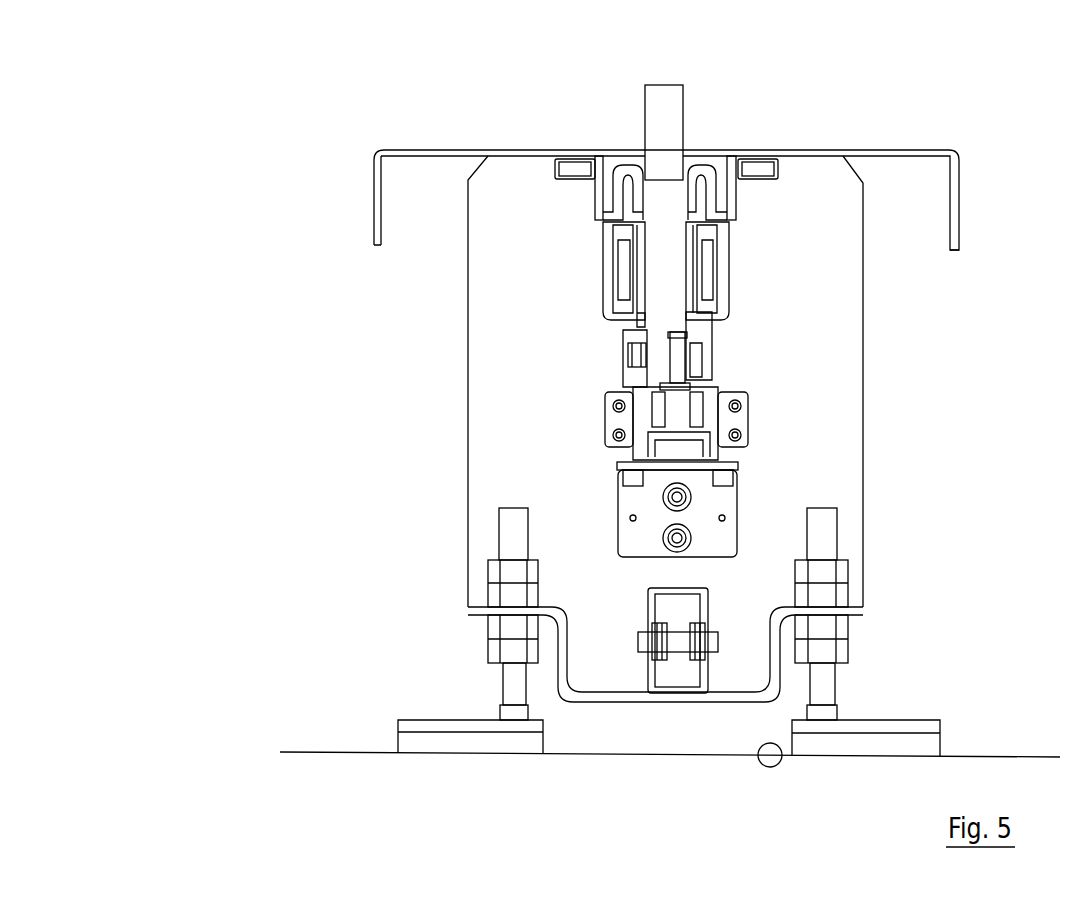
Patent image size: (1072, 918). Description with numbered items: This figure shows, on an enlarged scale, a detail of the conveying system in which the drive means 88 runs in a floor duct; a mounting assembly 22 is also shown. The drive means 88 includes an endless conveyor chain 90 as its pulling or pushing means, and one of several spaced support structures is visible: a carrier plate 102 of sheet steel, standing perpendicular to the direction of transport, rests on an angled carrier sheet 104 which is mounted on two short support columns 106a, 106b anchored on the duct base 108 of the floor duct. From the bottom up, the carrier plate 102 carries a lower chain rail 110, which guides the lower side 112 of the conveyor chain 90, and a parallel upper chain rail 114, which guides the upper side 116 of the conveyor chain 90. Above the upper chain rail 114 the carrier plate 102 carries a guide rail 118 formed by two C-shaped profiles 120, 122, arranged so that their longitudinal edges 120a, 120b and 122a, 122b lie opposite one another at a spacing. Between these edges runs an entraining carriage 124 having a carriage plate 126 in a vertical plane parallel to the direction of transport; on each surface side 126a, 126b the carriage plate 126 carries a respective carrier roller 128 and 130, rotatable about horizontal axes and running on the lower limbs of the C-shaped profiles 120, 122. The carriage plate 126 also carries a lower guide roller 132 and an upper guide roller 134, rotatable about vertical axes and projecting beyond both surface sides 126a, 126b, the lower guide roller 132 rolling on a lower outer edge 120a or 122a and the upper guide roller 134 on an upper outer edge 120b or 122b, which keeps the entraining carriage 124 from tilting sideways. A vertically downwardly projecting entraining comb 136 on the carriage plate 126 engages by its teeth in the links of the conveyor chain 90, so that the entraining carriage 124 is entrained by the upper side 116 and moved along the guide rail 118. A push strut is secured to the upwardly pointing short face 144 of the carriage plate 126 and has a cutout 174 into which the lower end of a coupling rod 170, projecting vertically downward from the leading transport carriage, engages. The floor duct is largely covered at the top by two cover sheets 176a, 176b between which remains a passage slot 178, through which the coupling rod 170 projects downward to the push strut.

The mounting assembly 22 is at (230, 440).
The drive means 88 is at (950, 476).
The endless conveyor chain 90 is at (735, 392).
The carrier plate 102 is at (821, 185).
The angled carrier sheet 104 is at (600, 700).
The short support column 106a is at (515, 688).
The short support column 106b is at (823, 690).
The duct base 108 is at (774, 768).
The lower chain rail 110 is at (680, 613).
The lower side 112 is at (683, 647).
The upper chain rail 114 is at (650, 452).
The upper side 116 is at (640, 427).
The guide rail 118 is at (760, 318).
The C-shaped profile 120 is at (612, 258).
The longitudinal edge 120a is at (632, 347).
The longitudinal edge 120b is at (632, 188).
The C-shaped profile 122 is at (722, 240).
The longitudinal edge 122a is at (690, 328).
The longitudinal edge 122b is at (692, 188).
The entraining carriage 124 is at (690, 205).
The carriage plate 126 is at (660, 303).
The surface side 126a is at (645, 320).
The surface side 126b is at (737, 212).
The carrier roller 128 is at (623, 237).
The carrier roller 130 is at (712, 305).
The lower guide roller 132 is at (748, 297).
The upper guide roller 134 is at (656, 205).
The entraining comb 136 is at (713, 378).
The short face 144 is at (560, 158).
The coupling rod 170 is at (660, 97).
The cutout 174 is at (672, 205).
The cover sheet 176a is at (410, 150).
The cover sheet 176b is at (918, 151).
The passage slot 178 is at (640, 220).